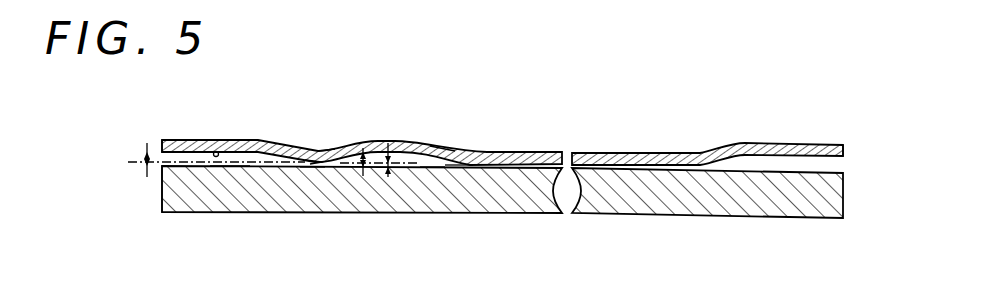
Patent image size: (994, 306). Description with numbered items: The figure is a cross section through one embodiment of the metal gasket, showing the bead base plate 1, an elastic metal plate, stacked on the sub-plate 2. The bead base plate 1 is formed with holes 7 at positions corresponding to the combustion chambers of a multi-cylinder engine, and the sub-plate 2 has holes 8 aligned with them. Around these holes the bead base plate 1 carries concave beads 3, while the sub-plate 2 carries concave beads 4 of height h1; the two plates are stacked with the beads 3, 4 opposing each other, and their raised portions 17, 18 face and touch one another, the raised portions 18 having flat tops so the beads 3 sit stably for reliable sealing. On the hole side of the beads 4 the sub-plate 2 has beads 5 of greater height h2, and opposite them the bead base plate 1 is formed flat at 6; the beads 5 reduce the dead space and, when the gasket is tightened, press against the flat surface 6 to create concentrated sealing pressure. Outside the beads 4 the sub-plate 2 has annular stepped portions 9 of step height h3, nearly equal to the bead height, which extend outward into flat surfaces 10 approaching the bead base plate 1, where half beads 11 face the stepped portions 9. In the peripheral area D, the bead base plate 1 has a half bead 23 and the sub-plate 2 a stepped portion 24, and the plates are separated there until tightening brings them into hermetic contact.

The bead base plate 1 is at (424, 139).
The sub-plate 2 is at (423, 222).
The beads (first beads) 3 is at (323, 158).
The beads (second beads) 4 is at (312, 166).
The beads (third beads) 5 is at (228, 170).
The flat surface 6 is at (213, 152).
The holes (first holes) 7 is at (163, 141).
The holes (second holes) 8 is at (162, 186).
The stepped portions 9 is at (431, 170).
The flat surfaces 10 is at (453, 170).
The half beads 11 is at (441, 144).
The raised portions 17 is at (313, 164).
The raised portions 18 is at (316, 165).
The half bead 23 is at (718, 150).
The stepped portion 24 is at (720, 194).
The height of beads 4 h1 is at (364, 148).
The height of beads 5 h2 is at (125, 160).
The step height h3 is at (388, 143).
The peripheral area D is at (848, 152).